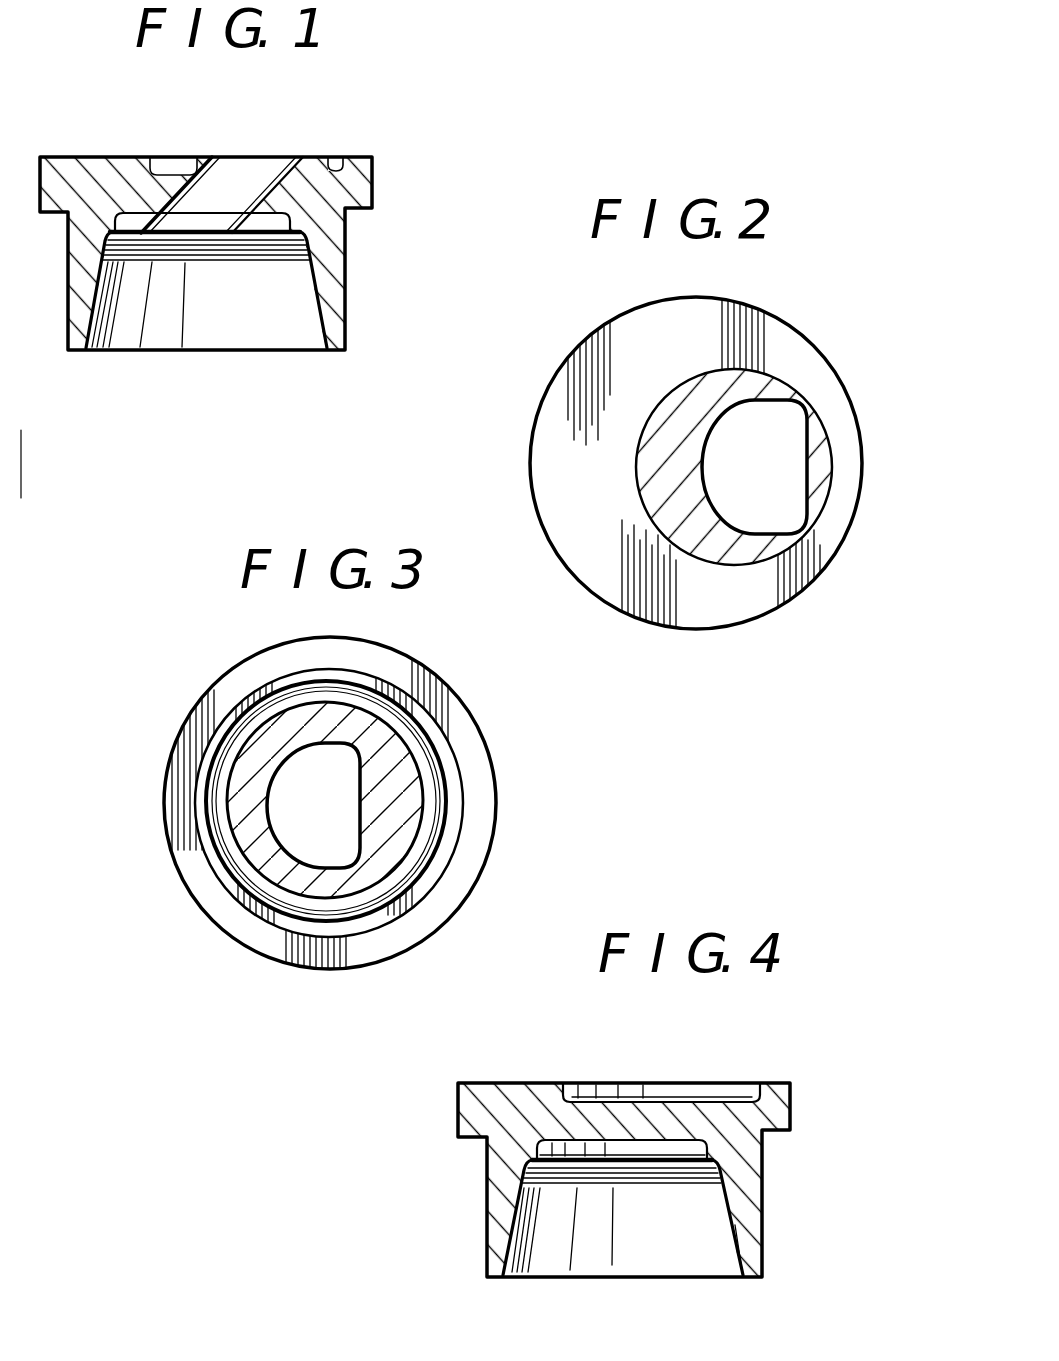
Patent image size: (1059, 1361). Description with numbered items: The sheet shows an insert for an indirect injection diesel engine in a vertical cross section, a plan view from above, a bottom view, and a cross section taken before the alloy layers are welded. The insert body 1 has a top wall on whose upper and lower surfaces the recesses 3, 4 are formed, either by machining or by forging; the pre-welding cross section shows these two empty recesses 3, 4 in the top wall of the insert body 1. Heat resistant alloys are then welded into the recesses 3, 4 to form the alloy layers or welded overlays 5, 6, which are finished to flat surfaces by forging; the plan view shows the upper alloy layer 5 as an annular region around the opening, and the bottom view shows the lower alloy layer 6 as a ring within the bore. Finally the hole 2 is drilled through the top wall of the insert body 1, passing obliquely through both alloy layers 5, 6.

In FIG. 1, the insert body 1 is at (392, 176).
In FIG. 2, the insert body 1 is at (514, 407).
In FIG. 3, the insert body 1 is at (140, 778).
In FIG. 4, the insert body 1 is at (808, 1092).
In FIG. 1, the hole 2 is at (256, 168).
In FIG. 2, the hole 2 is at (790, 472).
In FIG. 3, the hole 2 is at (342, 810).
In FIG. 4, the recess 3 is at (683, 1090).
In FIG. 4, the recess 4 is at (631, 1150).
In FIG. 1, the alloy layer 5 is at (178, 163).
In FIG. 2, the alloy layer 5 is at (768, 378).
In FIG. 1, the alloy layer 6 is at (262, 222).
In FIG. 3, the alloy layer 6 is at (413, 770).